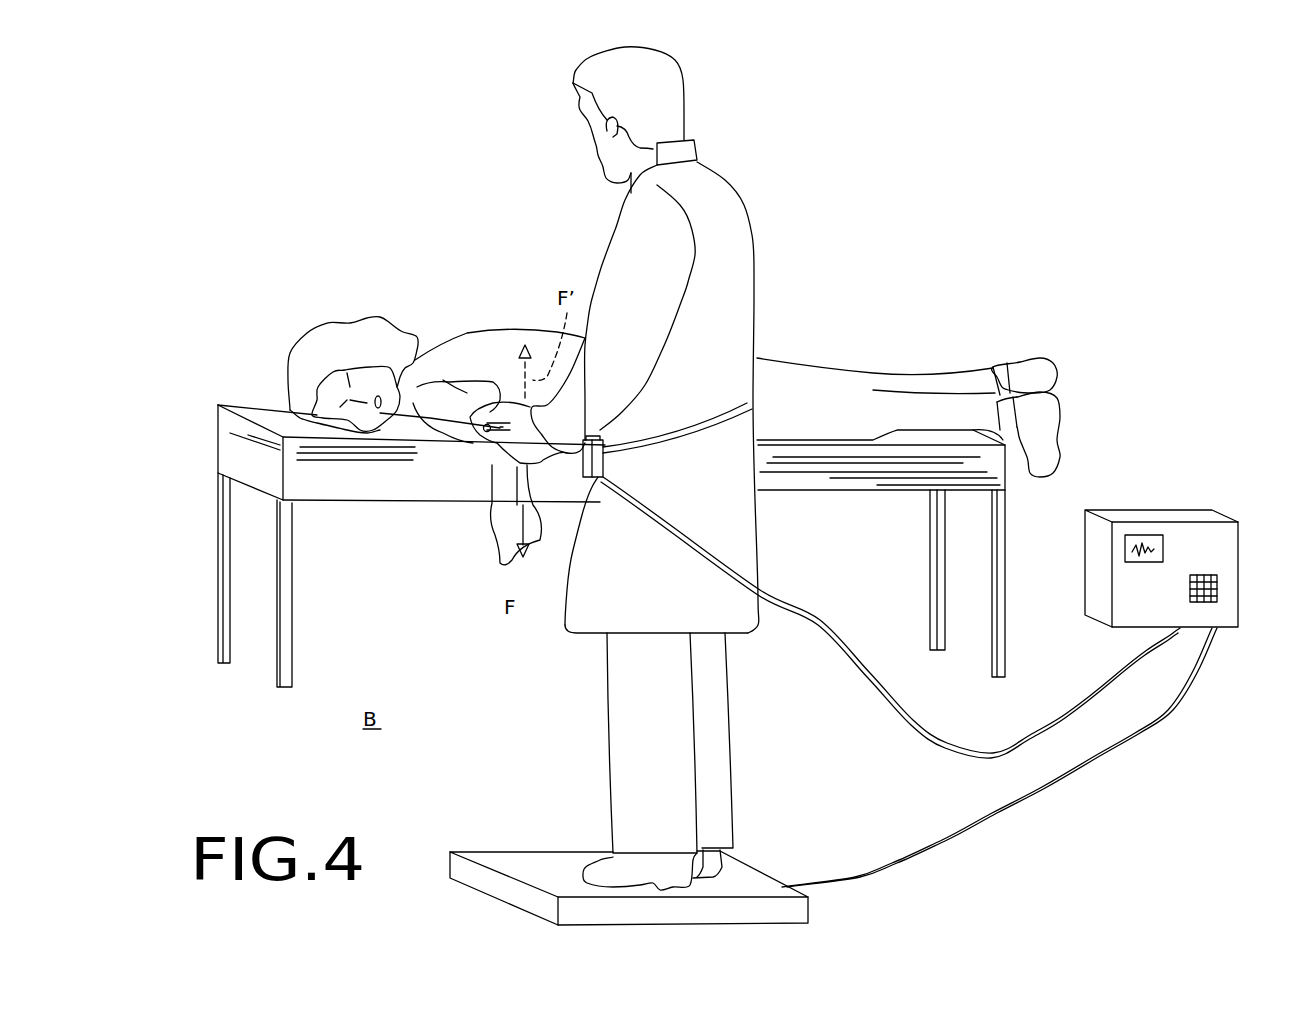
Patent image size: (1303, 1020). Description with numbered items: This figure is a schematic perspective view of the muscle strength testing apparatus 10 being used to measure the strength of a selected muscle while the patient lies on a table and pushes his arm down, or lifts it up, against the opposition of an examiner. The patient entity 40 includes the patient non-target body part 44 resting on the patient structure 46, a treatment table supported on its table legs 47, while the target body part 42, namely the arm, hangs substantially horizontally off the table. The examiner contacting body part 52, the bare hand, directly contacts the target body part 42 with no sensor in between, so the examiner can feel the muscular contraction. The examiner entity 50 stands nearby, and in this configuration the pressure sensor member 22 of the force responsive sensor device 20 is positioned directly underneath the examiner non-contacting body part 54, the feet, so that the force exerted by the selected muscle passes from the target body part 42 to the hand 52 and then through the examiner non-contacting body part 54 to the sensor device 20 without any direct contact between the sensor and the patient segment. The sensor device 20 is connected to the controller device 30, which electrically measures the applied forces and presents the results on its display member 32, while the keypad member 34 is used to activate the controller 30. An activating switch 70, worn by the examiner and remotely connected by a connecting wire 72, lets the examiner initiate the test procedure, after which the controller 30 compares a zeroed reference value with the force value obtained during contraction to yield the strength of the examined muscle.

The muscle strength testing apparatus 10 is at (895, 216).
The force responsive sensor device 20 is at (500, 781).
The pressure sensor member 22 is at (740, 868).
The controller device 30 is at (1225, 628).
The display member 32 is at (1155, 535).
The keypad member 34 is at (1218, 592).
The patient entity 40 is at (456, 205).
The target body part 42 is at (475, 445).
The patient non-target body part 44 is at (477, 328).
The patient structure 46 is at (855, 490).
The table legs 47 is at (1005, 575).
The examiner entity 50 is at (801, 690).
The examiner contacting body part 52 is at (497, 477).
The examiner non-contacting body part 54 is at (745, 203).
The activating switch 70 is at (603, 480).
The connecting wire 72 is at (817, 625).